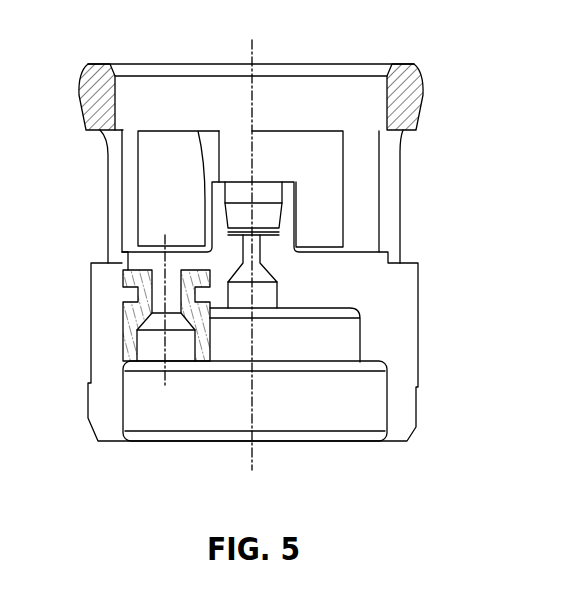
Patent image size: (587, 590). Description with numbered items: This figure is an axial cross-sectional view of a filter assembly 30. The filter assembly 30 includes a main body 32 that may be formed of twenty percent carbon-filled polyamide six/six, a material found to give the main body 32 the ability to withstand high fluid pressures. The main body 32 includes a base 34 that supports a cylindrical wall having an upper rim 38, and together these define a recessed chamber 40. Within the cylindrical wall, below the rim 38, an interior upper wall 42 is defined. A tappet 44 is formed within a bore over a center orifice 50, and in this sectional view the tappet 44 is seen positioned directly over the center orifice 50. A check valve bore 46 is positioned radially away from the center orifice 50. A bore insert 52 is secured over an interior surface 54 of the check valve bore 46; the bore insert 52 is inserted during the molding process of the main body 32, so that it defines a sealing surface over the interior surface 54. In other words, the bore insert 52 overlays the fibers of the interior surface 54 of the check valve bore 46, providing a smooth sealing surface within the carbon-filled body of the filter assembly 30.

The filter assembly 30 is at (455, 89).
The main body 32 is at (108, 203).
The base 34 is at (412, 440).
The upper rim 38 is at (97, 64).
The recessed chamber 40 is at (359, 118).
The interior upper wall 42 is at (362, 252).
The tappet 44 is at (255, 203).
The check valve bore 46 is at (158, 287).
The center orifice 50 is at (265, 295).
The bore insert 52 is at (125, 328).
The interior surface 54 is at (152, 316).